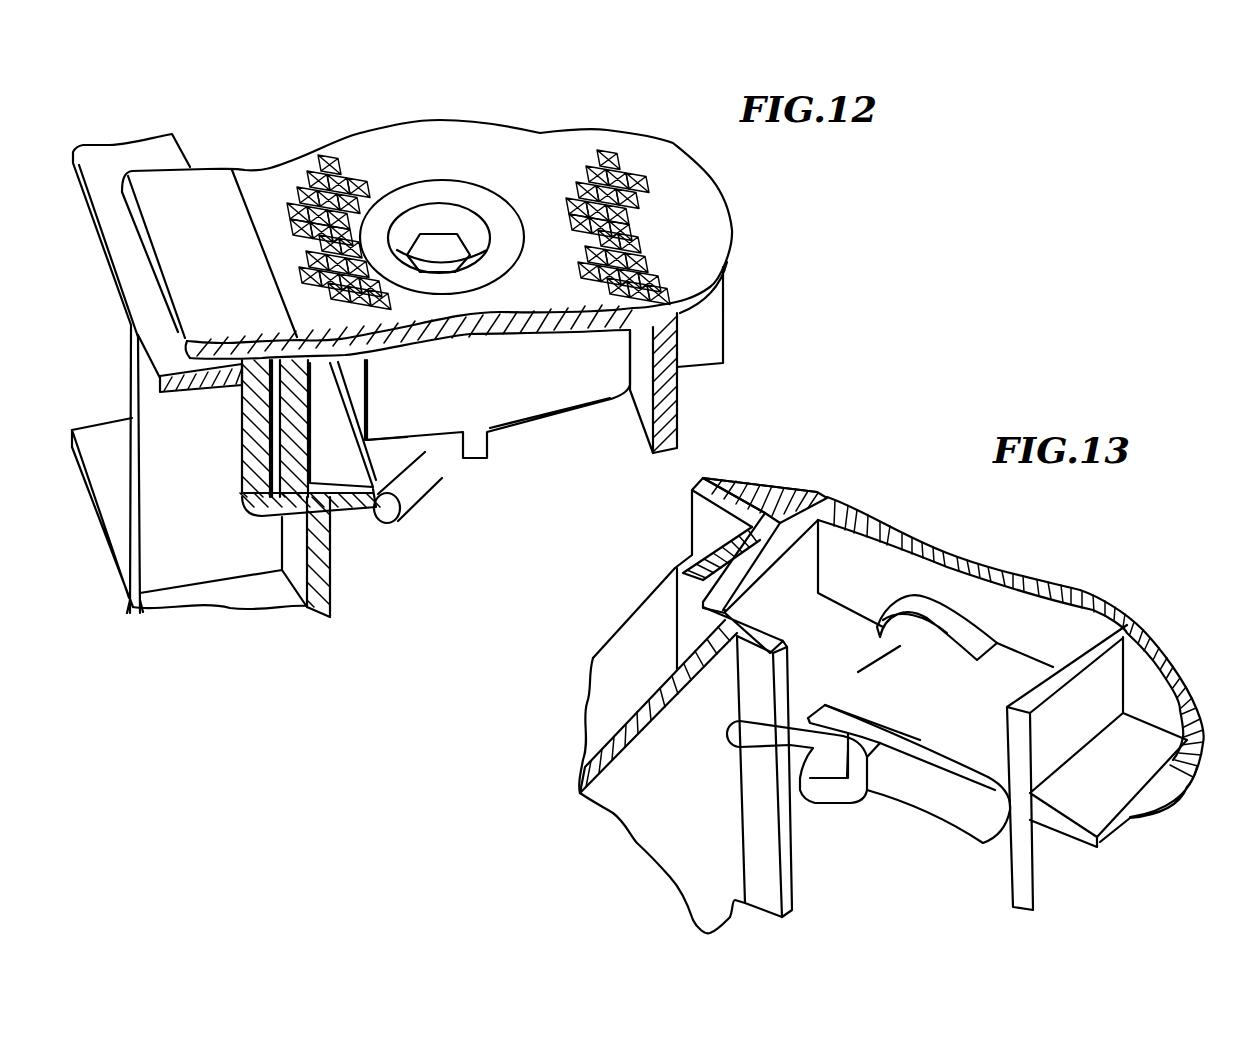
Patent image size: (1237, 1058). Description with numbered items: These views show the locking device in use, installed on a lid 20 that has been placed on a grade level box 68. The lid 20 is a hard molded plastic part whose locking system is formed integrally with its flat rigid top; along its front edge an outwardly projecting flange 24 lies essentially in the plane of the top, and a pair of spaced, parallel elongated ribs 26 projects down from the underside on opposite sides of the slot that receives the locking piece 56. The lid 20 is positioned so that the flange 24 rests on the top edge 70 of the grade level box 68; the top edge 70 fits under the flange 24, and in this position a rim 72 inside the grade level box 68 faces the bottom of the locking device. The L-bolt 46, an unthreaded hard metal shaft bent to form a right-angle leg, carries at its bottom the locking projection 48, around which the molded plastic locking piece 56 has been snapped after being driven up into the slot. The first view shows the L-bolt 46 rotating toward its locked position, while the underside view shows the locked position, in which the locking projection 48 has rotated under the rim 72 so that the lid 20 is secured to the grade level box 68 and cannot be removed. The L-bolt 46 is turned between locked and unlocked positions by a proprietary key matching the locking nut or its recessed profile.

In FIG. 12, the lid 20 is at (613, 148).
In FIG. 13, the lid 20 is at (1032, 573).
In FIG. 12, the flange 24 is at (228, 267).
In FIG. 13, the flange 24 is at (773, 492).
In FIG. 12, the rib 26 is at (262, 493).
In FIG. 13, the rib 26 is at (770, 547).
In FIG. 12, the L-bolt 46 is at (437, 247).
In FIG. 13, the L-bolt 46 is at (937, 607).
In FIG. 12, the locking projection 48 is at (405, 493).
In FIG. 13, the locking projection 48 is at (773, 750).
In FIG. 12, the locking piece 56 is at (537, 430).
In FIG. 13, the locking piece 56 is at (957, 807).
In FIG. 12, the grade level box 68 is at (243, 592).
In FIG. 12, the top edge 70 is at (125, 157).
In FIG. 13, the top edge 70 is at (715, 492).
In FIG. 12, the rim 72 is at (343, 507).
In FIG. 13, the rim 72 is at (770, 878).